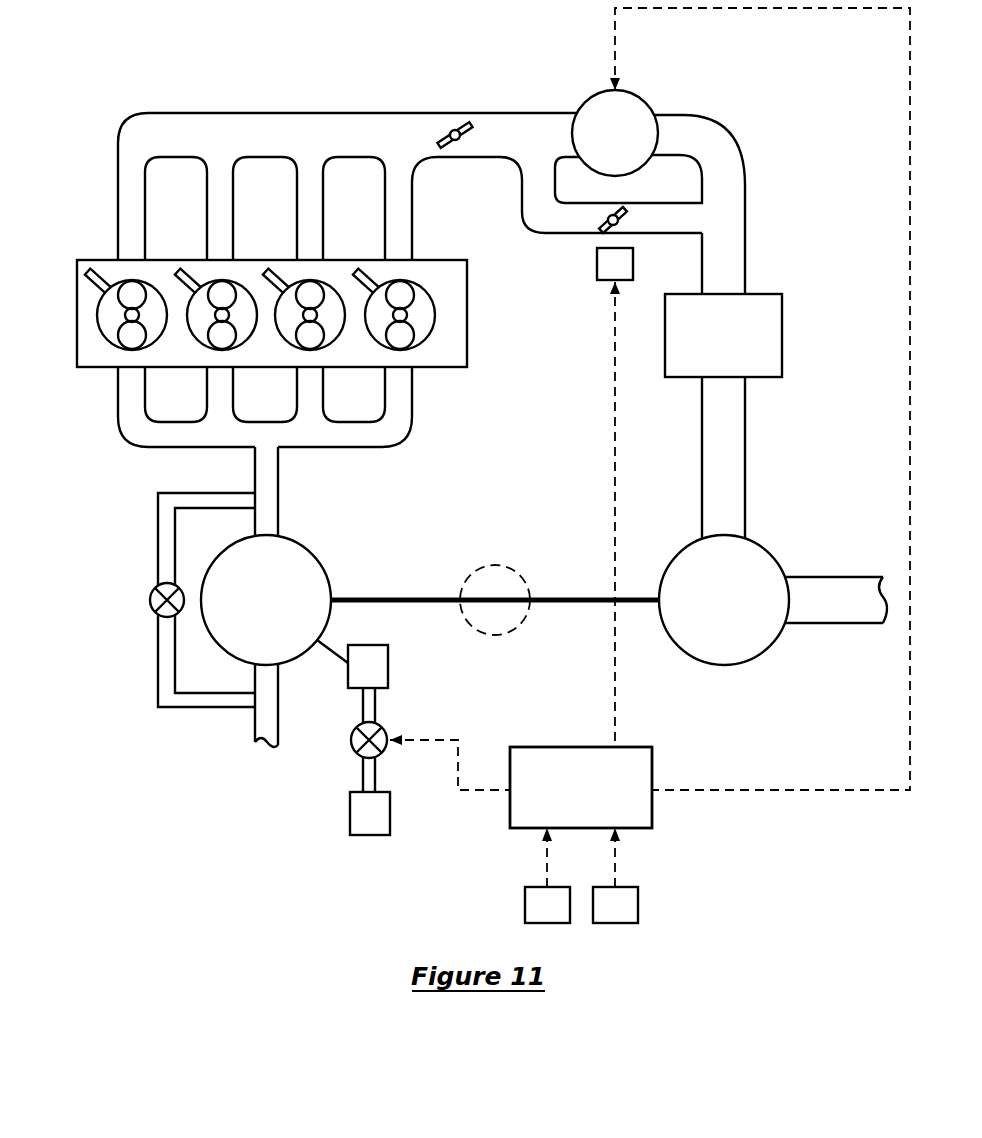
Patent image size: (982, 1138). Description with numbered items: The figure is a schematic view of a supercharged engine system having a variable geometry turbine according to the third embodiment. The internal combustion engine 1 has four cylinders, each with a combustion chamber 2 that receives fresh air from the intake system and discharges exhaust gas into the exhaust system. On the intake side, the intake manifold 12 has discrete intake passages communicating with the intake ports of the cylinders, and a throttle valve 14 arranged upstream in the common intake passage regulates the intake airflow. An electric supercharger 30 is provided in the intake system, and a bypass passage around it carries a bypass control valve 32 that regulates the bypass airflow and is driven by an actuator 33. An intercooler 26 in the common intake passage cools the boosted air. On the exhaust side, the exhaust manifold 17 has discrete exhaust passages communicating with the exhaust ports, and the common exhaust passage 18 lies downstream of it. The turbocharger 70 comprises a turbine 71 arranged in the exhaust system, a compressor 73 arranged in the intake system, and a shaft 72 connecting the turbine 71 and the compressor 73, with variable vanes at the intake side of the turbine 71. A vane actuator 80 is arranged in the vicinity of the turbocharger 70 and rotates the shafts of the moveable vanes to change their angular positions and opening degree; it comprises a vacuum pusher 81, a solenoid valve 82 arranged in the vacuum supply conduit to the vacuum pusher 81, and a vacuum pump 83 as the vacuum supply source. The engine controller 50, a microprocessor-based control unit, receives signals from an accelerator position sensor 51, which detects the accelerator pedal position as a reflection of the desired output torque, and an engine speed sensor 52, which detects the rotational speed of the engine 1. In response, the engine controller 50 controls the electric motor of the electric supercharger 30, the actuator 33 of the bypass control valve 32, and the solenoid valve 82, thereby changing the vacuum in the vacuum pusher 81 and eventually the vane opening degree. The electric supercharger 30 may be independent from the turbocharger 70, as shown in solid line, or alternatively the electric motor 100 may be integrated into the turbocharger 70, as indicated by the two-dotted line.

The internal combustion engine 1 is at (438, 255).
The combustion chamber 2 is at (108, 313).
The intake manifold 12 is at (218, 113).
The throttle valve 14 is at (467, 120).
The exhaust manifold 17 is at (385, 447).
The common exhaust passage 18 is at (278, 497).
The intercooler 26 is at (782, 335).
The electric supercharger 30 is at (638, 93).
The bypass control valve 32 is at (623, 212).
The actuator 33 is at (597, 268).
The engine controller 50 is at (652, 770).
The accelerator position sensor 51 is at (525, 907).
The engine speed sensor 52 is at (638, 907).
The turbocharger 70 is at (790, 645).
The turbine 71 is at (318, 557).
The shaft 72 is at (420, 597).
The compressor 73 is at (778, 545).
The vane actuator 80 is at (408, 667).
The vacuum pusher 81 is at (348, 675).
The solenoid valve 82 is at (352, 748).
The vacuum pump 83 is at (350, 815).
The electric motor 100 is at (490, 566).